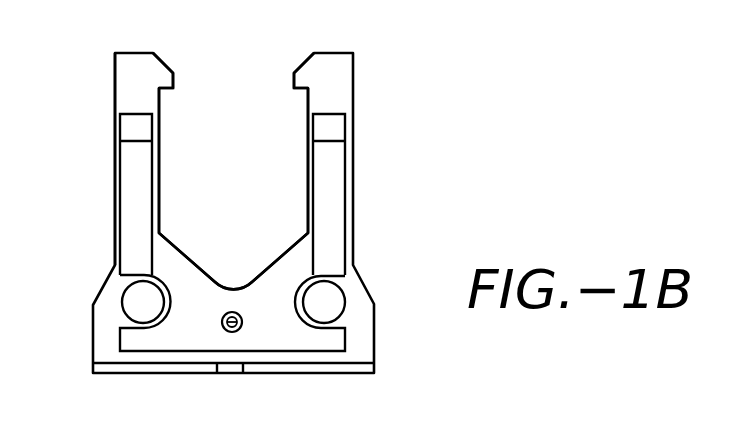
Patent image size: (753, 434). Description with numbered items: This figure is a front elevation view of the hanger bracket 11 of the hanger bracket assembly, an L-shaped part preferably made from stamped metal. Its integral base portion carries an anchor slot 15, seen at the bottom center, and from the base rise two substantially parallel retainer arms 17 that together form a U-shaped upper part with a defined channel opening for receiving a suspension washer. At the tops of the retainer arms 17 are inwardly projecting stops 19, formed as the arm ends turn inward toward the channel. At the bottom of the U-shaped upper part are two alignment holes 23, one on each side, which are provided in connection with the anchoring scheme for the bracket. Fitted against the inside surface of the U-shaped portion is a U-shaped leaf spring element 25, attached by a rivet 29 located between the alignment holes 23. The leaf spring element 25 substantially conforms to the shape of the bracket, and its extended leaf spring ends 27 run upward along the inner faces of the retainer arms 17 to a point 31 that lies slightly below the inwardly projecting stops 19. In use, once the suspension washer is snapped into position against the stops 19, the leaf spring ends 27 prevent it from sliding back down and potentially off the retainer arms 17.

The hanger bracket 11 is at (356, 178).
The anchor slot 15 is at (233, 373).
The retainer arms 17 is at (315, 98).
The inwardly projecting stops 19 is at (297, 76).
The alignment holes 23 is at (324, 302).
The U-shaped leaf spring element 25 is at (153, 262).
The extended leaf spring ends 27 is at (340, 125).
The rivet 29 is at (243, 325).
The point 31 is at (121, 107).